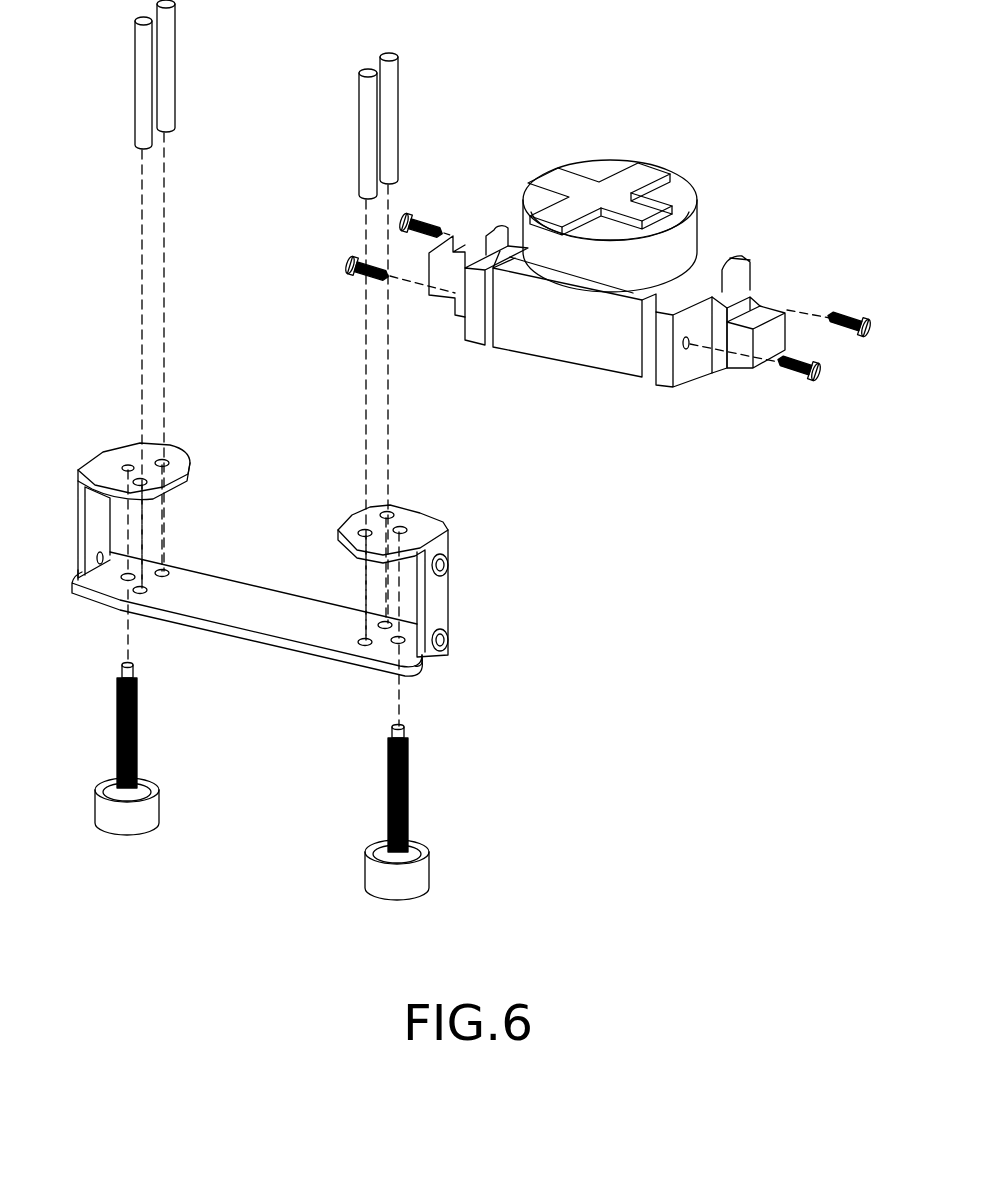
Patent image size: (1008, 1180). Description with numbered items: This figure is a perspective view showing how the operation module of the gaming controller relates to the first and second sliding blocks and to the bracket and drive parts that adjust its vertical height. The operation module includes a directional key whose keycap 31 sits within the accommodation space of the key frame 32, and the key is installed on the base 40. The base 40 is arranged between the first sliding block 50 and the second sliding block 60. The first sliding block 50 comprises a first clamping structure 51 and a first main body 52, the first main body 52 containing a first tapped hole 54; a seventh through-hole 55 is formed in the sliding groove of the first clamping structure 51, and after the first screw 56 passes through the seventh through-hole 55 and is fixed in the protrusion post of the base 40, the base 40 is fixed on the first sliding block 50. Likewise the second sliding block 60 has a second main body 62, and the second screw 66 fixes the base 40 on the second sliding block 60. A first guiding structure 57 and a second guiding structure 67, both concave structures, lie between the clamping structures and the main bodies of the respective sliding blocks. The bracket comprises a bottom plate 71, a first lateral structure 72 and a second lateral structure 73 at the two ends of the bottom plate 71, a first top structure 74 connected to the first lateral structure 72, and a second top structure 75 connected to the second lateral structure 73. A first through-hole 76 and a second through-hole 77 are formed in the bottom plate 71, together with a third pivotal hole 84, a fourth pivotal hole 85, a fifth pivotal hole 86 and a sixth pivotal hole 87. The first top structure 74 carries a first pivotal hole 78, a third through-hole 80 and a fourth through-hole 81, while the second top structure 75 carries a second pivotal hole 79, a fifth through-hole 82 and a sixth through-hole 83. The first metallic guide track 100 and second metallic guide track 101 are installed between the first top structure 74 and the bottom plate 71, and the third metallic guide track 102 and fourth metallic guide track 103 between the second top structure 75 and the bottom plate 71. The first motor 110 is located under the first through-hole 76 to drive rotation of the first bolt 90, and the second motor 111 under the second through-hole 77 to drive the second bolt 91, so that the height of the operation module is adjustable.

The keycap 31 is at (641, 176).
The key frame 32 is at (676, 186).
The base 40 is at (592, 352).
The first sliding block 50 is at (666, 357).
The first clamping structure 51 is at (716, 286).
The first main body 52 is at (779, 326).
The first tapped hole 54 is at (760, 300).
The seventh through-hole 55 is at (690, 345).
The first screw 56 is at (872, 335).
The first guiding structure 57 is at (741, 272).
The second sliding block 60 is at (477, 330).
The second main body 62 is at (447, 298).
The second screw 66 is at (424, 218).
The second guiding structure 67 is at (500, 235).
The bottom plate 71 is at (232, 612).
The first lateral structure 72 is at (442, 606).
The second lateral structure 73 is at (98, 522).
The first top structure 74 is at (346, 527).
The second top structure 75 is at (191, 470).
The first through-hole 76 is at (426, 656).
The second through-hole 77 is at (80, 574).
The first pivotal hole 78 is at (408, 530).
The second pivotal hole 79 is at (124, 465).
The third through-hole 80 is at (347, 545).
The fourth through-hole 81 is at (392, 512).
The fifth through-hole 82 is at (148, 482).
The sixth through-hole 83 is at (166, 458).
The third pivotal hole 84 is at (382, 633).
The fourth pivotal hole 85 is at (392, 642).
The fifth pivotal hole 86 is at (138, 593).
The sixth pivotal hole 87 is at (166, 570).
The first bolt 90 is at (409, 776).
The second bolt 91 is at (138, 718).
The first metallic guide track 100 is at (369, 140).
The second metallic guide track 101 is at (391, 115).
The third metallic guide track 102 is at (146, 90).
The fourth metallic guide track 103 is at (165, 62).
The first motor 110 is at (416, 878).
The second motor 111 is at (148, 815).